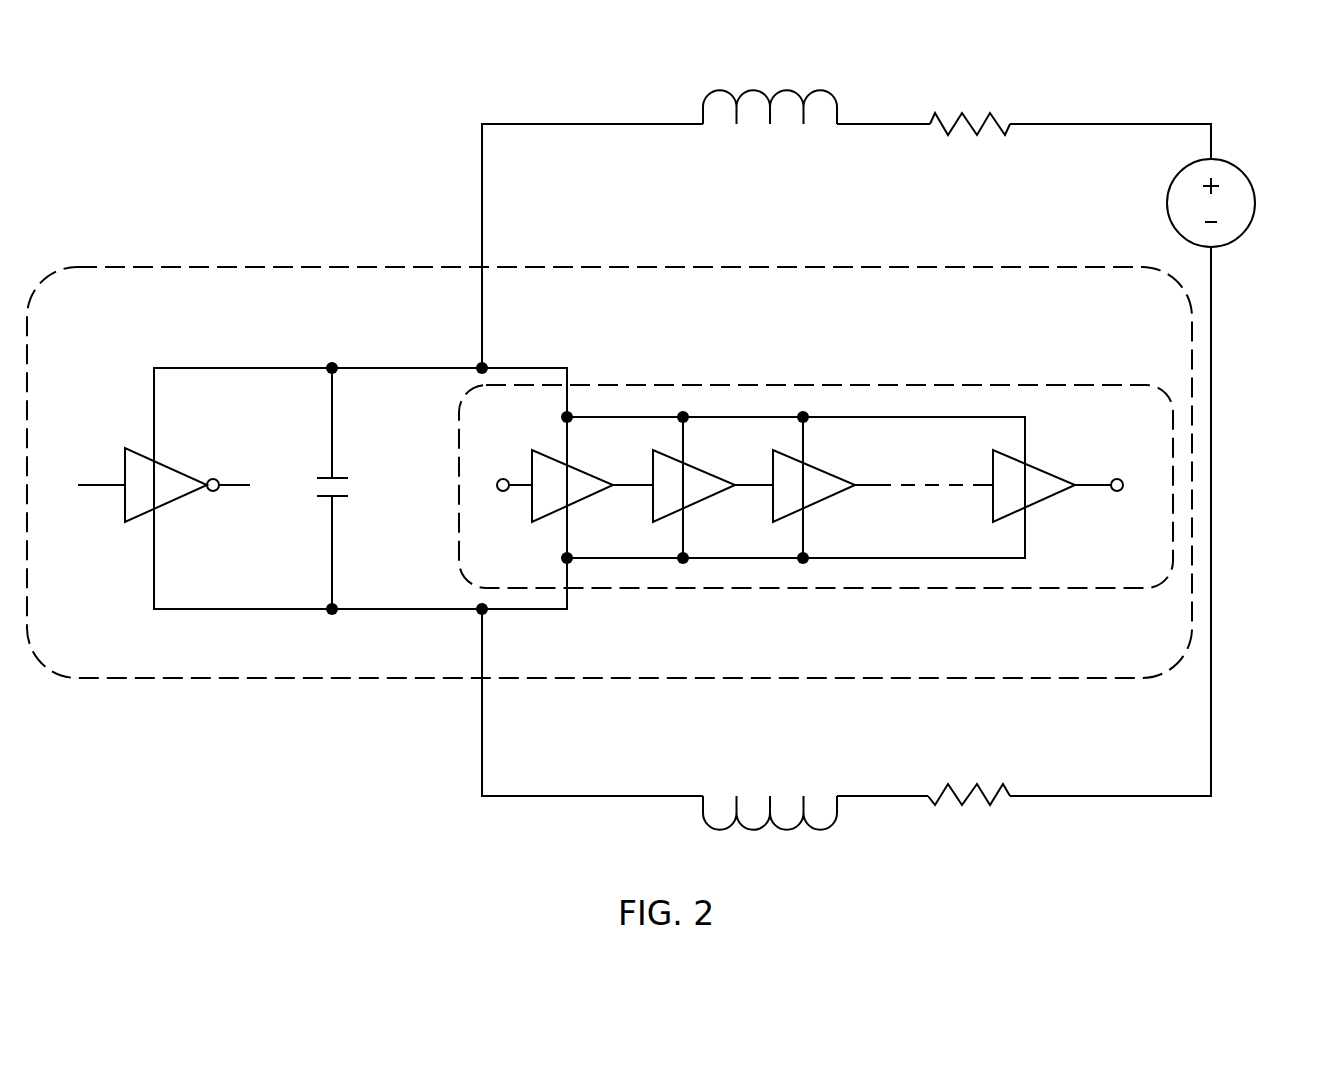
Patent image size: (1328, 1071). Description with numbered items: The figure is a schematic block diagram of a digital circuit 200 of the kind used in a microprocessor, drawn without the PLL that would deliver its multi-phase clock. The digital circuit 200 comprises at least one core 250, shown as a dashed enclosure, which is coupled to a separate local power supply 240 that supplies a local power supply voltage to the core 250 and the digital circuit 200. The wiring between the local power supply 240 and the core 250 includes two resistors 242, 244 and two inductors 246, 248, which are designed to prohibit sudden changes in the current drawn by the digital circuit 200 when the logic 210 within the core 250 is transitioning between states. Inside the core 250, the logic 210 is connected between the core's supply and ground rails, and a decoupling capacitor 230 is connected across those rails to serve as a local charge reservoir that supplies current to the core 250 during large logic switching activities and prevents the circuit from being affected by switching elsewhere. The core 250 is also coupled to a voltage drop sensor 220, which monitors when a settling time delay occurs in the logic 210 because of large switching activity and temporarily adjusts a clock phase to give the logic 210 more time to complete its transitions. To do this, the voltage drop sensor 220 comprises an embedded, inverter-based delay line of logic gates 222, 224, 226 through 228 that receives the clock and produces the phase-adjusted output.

The digital circuit 200 is at (250, 127).
The logic 210 is at (165, 466).
The voltage drop sensor 220 is at (1142, 428).
The logic gate 222 is at (577, 496).
The logic gate 224 is at (698, 496).
The logic gate 226 is at (818, 496).
The logic gate 228 is at (1038, 496).
The decoupling capacitor 230 is at (340, 497).
The local power supply 240 is at (1237, 167).
The resistor 242 is at (953, 120).
The resistor 244 is at (972, 800).
The inductor 246 is at (753, 90).
The inductor 248 is at (787, 830).
The core 250 is at (333, 267).